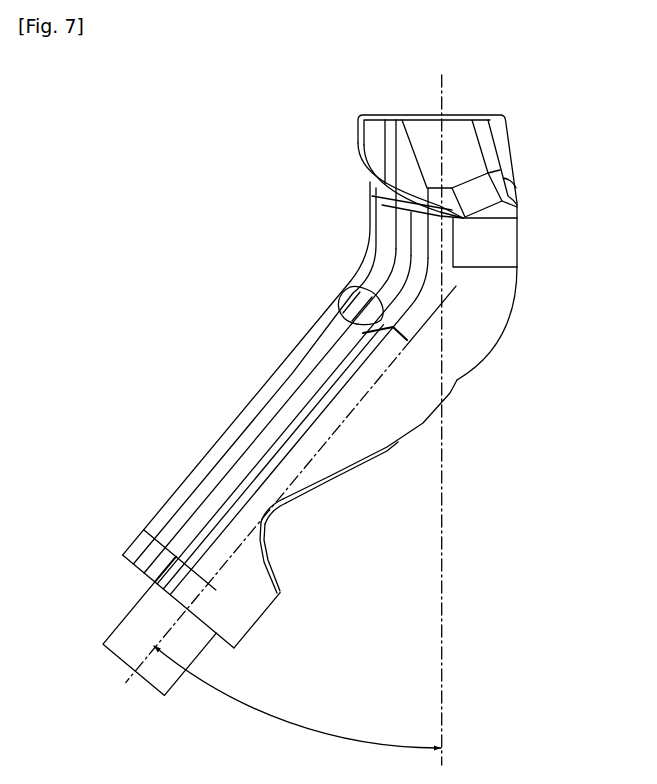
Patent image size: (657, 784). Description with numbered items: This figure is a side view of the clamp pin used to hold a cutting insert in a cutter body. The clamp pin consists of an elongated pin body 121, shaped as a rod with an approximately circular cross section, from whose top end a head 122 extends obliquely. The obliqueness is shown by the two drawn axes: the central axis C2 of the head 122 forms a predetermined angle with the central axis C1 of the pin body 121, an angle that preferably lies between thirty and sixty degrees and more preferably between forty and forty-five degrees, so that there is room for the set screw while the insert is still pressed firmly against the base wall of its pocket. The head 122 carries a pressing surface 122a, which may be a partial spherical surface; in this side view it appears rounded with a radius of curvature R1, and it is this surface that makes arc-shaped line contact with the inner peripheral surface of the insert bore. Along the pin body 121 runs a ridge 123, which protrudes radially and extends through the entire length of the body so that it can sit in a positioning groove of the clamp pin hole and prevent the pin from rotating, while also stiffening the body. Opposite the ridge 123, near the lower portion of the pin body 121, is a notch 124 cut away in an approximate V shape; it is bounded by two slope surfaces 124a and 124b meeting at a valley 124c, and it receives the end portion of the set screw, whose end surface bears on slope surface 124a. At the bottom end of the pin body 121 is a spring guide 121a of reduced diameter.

The pin body 121 is at (236, 438).
The spring guide 121a is at (130, 630).
The head 122 is at (438, 247).
The pressing surface 122a is at (360, 143).
The ridge 123 is at (185, 483).
The notch 124 is at (345, 514).
The slope surface 124a is at (280, 576).
The slope surface 124b is at (383, 452).
The valley 124c is at (270, 507).
The radius of curvature R1 is at (358, 170).
The central axis of the pin body C1 is at (279, 496).
The central axis of the head C2 is at (442, 409).